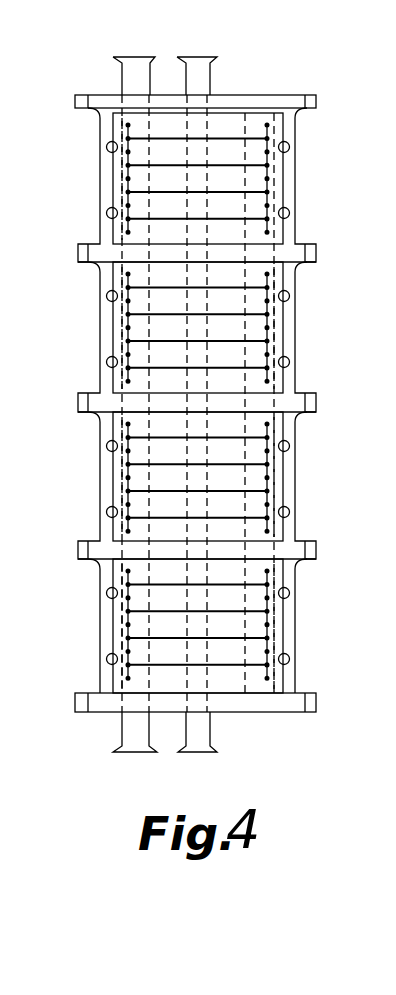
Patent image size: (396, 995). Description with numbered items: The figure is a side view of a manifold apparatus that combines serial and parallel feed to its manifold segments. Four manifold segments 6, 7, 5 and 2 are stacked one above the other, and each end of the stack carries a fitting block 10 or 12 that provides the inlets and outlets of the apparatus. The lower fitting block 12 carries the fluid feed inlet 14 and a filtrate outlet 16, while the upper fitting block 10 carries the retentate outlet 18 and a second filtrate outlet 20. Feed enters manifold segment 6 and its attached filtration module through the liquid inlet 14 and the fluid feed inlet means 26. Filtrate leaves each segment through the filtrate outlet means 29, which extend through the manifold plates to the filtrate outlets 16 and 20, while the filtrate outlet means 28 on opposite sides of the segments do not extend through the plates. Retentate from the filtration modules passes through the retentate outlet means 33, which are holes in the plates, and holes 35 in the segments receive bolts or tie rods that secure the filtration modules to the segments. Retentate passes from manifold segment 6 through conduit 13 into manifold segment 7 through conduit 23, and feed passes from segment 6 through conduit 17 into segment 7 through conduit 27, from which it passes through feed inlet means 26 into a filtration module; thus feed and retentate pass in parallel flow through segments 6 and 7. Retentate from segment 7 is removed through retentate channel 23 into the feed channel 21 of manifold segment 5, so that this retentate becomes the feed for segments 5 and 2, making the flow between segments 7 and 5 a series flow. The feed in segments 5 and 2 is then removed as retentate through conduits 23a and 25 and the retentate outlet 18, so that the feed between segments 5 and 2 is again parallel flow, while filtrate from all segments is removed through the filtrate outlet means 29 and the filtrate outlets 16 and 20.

The manifold segment 2 is at (300, 184).
The manifold segment 5 is at (300, 377).
The manifold segment 7 is at (300, 521).
The manifold segment 6 is at (300, 669).
The fitting block 10 is at (297, 95).
The fitting block 12 is at (298, 713).
The fluid feed inlet 14 is at (120, 729).
The filtrate outlet 16 is at (210, 731).
The retentate outlet 18 is at (122, 80).
The filtrate outlet 20 is at (210, 82).
The fluid feed inlet means 26 is at (128, 125).
The filtrate outlet means 28 is at (128, 166).
The filtrate outlet means 29 is at (195, 193).
The retentate outlet means 33 is at (268, 424).
The holes 35 is at (290, 146).
The conduit 25 is at (121, 197).
The conduit 23a is at (121, 338).
The conduit 27 is at (121, 526).
The conduit 17 is at (121, 637).
The feed channel 21 is at (276, 329).
The retentate channel 23 is at (276, 497).
The conduit 13 is at (276, 612).